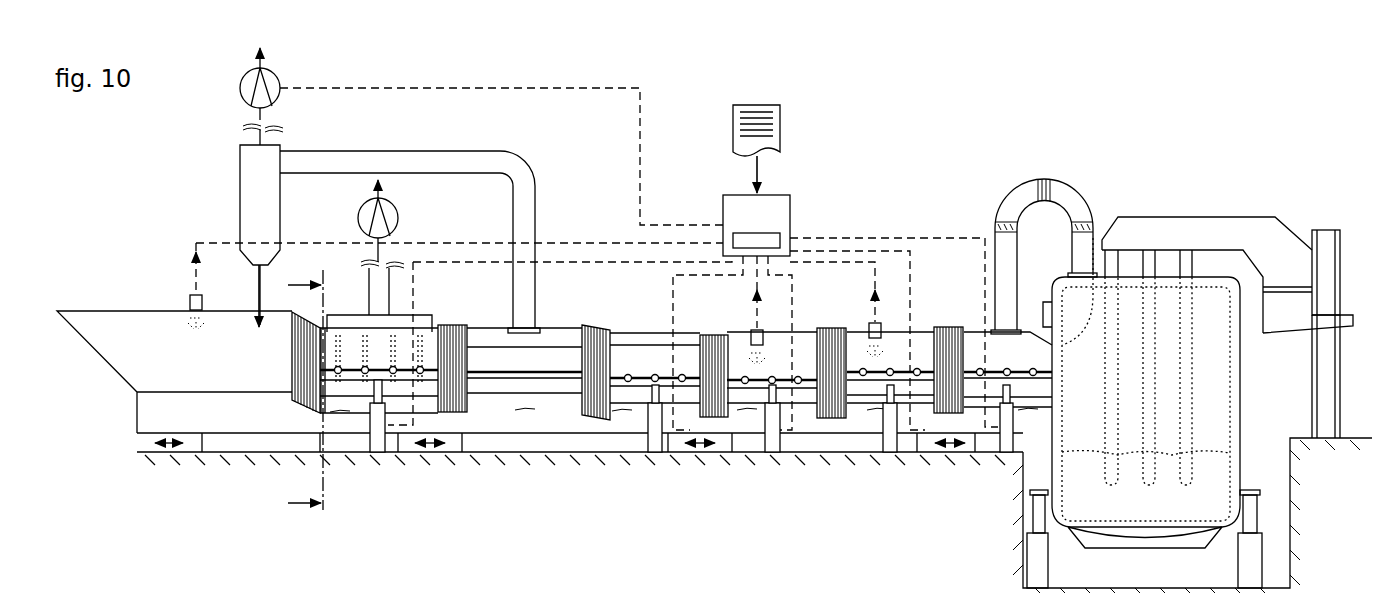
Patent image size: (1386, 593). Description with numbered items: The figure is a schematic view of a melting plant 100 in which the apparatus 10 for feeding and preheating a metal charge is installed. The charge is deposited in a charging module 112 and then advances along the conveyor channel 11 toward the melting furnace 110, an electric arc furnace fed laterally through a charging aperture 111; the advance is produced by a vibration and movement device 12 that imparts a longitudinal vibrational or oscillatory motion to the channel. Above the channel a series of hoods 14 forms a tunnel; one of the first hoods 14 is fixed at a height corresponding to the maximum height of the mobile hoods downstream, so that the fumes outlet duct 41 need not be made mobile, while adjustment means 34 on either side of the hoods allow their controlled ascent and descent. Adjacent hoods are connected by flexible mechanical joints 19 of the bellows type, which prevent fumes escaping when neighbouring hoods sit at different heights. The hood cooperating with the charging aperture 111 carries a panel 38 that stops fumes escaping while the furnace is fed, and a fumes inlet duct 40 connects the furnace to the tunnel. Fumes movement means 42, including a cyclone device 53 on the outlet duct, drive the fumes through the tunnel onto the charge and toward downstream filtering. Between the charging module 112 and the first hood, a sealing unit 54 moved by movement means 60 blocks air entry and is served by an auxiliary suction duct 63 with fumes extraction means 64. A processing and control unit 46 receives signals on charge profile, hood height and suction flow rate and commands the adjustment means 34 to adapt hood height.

The melting plant 100 is at (1076, 75).
The apparatus 10 is at (894, 217).
The conveyor channel 11 is at (552, 436).
The vibration and movement device 12 is at (190, 446).
The hood 14 is at (623, 326).
The flexible mechanical joint 19 is at (312, 386).
The adjustment means 34 is at (644, 432).
The panel 38 is at (1046, 319).
The fumes inlet duct 40 is at (1068, 198).
The fumes outlet duct 41 is at (455, 161).
The fumes movement means 42 is at (246, 84).
The processing and control unit 46 is at (802, 187).
The cyclone device 53 is at (248, 188).
The sealing unit 54 is at (350, 296).
The movement means 60 is at (363, 430).
The auxiliary suction duct 63 is at (382, 294).
The fumes extraction means 64 is at (362, 208).
The melting furnace 110 is at (1216, 215).
The charging aperture 111 is at (1093, 238).
The charging module 112 is at (113, 309).